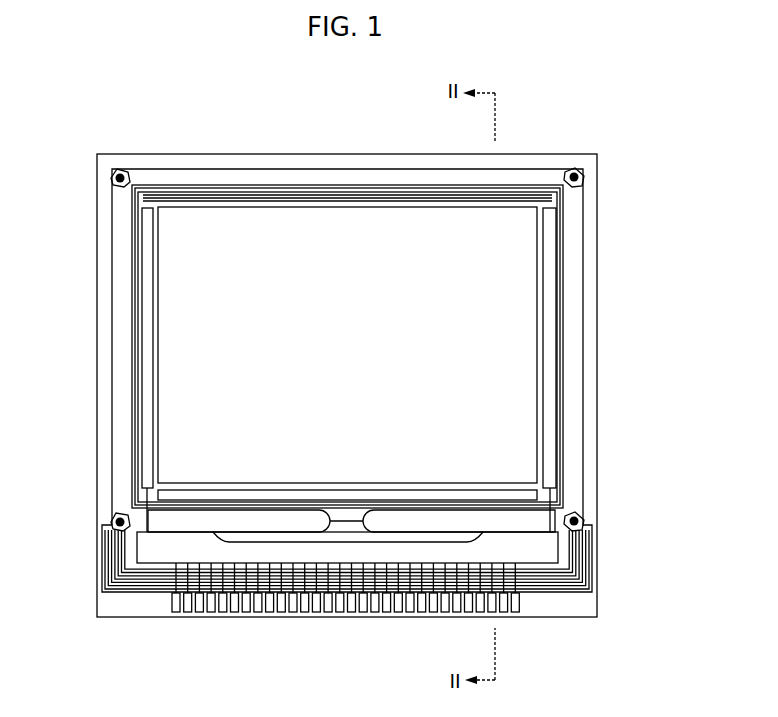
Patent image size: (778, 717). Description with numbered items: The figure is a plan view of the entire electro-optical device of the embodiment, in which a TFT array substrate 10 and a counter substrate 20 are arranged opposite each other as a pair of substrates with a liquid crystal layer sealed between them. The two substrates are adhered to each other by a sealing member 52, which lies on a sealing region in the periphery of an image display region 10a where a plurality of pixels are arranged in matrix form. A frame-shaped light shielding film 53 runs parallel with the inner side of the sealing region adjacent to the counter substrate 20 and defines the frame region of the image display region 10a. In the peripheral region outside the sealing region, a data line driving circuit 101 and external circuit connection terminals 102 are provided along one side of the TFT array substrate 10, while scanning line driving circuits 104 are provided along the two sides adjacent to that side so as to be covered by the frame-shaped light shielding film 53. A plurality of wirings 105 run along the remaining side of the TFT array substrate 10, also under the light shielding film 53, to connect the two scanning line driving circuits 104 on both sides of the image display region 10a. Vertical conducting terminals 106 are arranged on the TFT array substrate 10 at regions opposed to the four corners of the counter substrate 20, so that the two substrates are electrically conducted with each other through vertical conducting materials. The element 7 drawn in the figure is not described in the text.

The TFT array substrate 10 is at (206, 162).
The image display region 10a is at (195, 310).
The counter substrate 20 is at (365, 165).
The wirings 105 is at (250, 198).
The vertical conducting terminals 106 is at (122, 174).
The sealing member 52 is at (577, 341).
The scanning line driving circuits 104 is at (553, 388).
The frame-shaped light shielding film 53 is at (553, 496).
The inspection circuit 7 is at (228, 497).
The data line driving circuit 101 is at (160, 548).
The external circuit connection terminals 102 is at (318, 600).